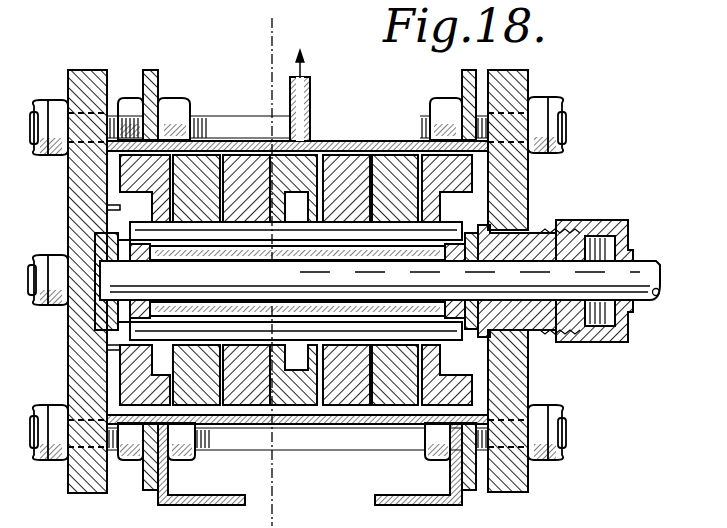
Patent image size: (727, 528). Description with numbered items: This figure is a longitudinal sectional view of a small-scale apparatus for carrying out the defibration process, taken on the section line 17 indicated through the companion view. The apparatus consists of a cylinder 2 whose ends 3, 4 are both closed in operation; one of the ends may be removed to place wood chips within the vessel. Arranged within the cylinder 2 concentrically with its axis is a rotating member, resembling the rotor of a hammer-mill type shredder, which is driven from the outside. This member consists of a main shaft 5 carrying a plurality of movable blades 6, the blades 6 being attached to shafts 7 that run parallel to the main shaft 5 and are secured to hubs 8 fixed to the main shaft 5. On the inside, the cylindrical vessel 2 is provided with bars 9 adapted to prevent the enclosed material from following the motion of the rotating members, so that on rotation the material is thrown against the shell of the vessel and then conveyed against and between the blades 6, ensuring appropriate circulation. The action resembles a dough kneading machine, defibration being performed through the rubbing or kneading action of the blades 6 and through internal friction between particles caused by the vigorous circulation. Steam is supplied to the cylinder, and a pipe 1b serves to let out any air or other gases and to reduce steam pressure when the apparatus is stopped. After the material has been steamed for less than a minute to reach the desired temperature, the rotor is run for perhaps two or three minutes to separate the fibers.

The section line 17 is at (255, 30).
The pipe 1b is at (310, 92).
The cylinder 2 is at (377, 141).
The end 3 is at (75, 200).
The end 4 is at (522, 185).
The main shaft 5 is at (380, 280).
The movable blades 6 is at (240, 160).
The shafts 7 is at (200, 240).
The hubs 8 is at (140, 262).
The bars 9 is at (495, 215).